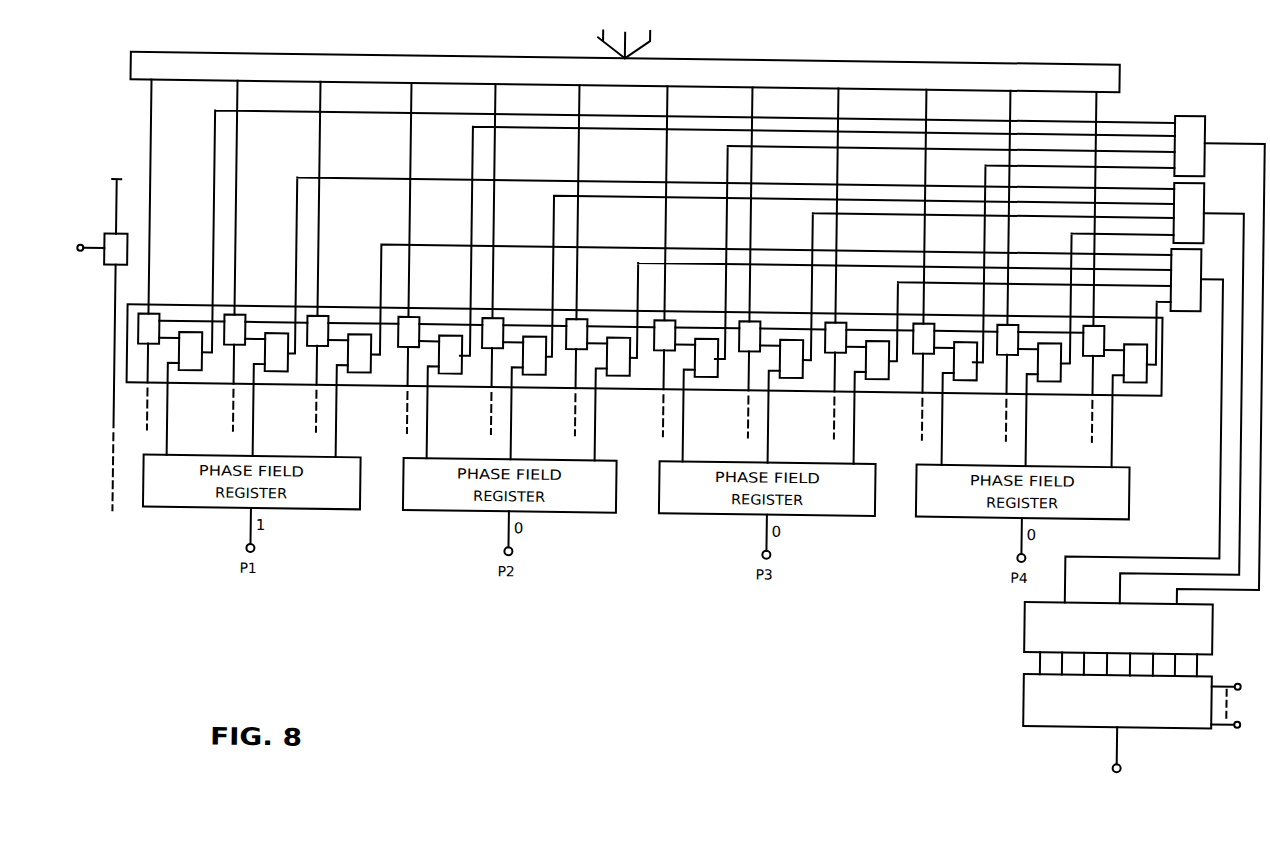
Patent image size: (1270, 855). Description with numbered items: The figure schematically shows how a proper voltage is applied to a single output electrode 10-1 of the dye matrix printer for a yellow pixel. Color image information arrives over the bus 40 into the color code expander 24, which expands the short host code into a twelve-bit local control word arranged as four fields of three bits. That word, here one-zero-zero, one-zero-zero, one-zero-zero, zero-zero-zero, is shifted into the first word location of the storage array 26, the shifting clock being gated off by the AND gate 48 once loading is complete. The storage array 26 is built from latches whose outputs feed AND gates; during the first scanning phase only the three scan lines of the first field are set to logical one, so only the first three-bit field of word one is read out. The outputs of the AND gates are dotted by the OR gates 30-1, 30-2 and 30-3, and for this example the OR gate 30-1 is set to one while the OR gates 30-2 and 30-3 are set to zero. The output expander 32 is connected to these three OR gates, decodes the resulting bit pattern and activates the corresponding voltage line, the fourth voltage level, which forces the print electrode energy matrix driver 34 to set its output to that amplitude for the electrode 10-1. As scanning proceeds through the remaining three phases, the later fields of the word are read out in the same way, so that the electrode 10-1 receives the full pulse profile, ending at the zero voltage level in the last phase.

The color code expander 24 is at (850, 58).
The bus 40 is at (645, 46).
The AND gate 48 is at (103, 241).
The storage array 26 is at (369, 222).
The OR gate 30-1 is at (1178, 109).
The OR gate 30-2 is at (1200, 181).
The OR gate 30-3 is at (1191, 304).
The output expander 32 is at (1027, 621).
The print electrode energy matrix driver 34 is at (1027, 692).
The output electrode 10-1 is at (1146, 761).